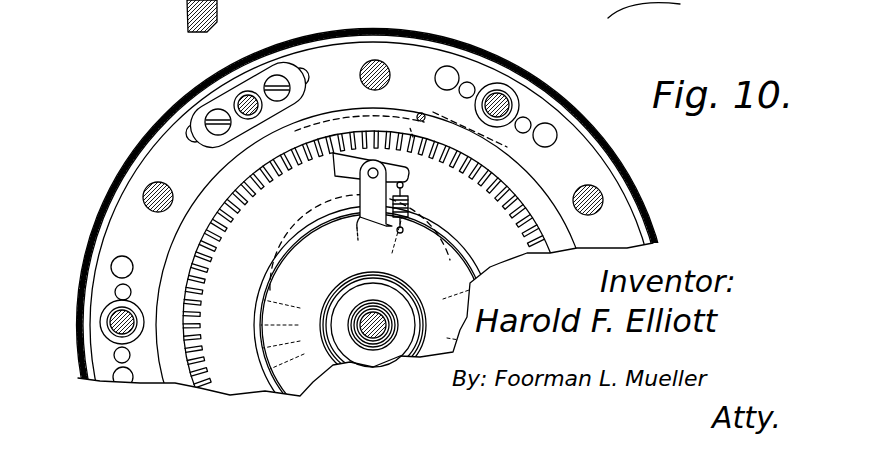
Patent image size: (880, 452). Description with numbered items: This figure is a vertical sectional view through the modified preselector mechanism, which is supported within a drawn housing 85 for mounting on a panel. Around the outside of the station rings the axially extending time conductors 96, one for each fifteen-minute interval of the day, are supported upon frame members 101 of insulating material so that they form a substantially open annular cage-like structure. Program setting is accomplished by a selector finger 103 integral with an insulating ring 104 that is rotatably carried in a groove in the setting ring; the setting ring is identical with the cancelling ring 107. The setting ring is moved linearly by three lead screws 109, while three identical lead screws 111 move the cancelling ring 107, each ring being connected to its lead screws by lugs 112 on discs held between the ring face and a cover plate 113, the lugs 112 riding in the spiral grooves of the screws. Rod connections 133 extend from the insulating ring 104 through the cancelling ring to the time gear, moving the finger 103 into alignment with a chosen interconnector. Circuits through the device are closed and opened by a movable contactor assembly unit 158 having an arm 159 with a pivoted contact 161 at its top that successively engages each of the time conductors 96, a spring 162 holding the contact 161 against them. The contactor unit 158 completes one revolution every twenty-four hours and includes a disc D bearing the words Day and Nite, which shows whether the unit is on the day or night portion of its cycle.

The drawn housing 85 is at (647, 208).
The time conductors 96 is at (243, 186).
The frame members 101 is at (217, 277).
The selector finger 103 is at (413, 137).
The insulating ring 104 is at (357, 113).
The cancelling ring 107 is at (340, 68).
The lead screws 109 is at (503, 100).
The lead screws 111 is at (237, 97).
The lugs 112 is at (216, 150).
The cover plate 113 is at (278, 74).
The rod connections 133 is at (421, 113).
The contactor assembly unit 158 is at (359, 188).
The arm 159 is at (375, 197).
The pivoted contact 161 is at (408, 176).
The spring 162 is at (410, 210).
The disc D is at (325, 373).